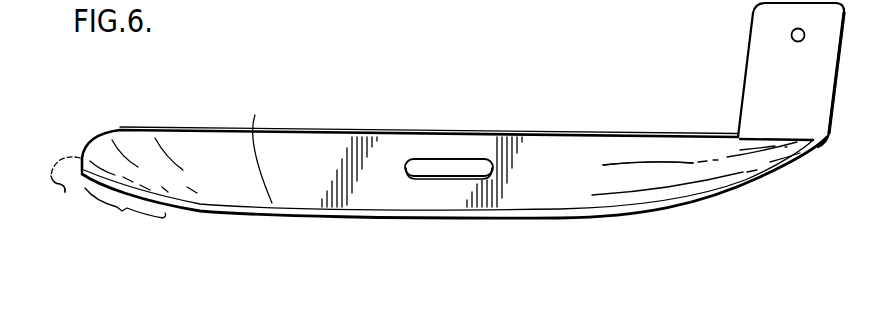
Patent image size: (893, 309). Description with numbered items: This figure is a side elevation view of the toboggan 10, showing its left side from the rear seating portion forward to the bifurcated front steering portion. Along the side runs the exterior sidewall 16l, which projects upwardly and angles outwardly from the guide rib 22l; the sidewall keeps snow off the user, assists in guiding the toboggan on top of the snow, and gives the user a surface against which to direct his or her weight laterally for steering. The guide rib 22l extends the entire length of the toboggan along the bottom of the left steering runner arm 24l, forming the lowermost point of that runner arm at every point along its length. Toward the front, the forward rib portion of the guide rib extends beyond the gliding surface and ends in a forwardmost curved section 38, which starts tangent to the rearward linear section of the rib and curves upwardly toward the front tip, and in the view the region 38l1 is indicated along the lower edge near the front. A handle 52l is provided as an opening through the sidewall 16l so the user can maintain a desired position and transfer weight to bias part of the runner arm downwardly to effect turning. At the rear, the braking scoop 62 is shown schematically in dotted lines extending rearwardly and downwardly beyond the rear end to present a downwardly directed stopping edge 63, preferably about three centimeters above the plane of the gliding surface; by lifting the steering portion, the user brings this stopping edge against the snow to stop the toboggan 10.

The toboggan 10 is at (216, 103).
The exterior sidewall 16l is at (329, 146).
The guide rib 22l is at (270, 145).
The steering runner arm 24l is at (724, 167).
The forwardmost curved section 38 is at (828, 151).
The front lower edge portion 38l1 is at (125, 219).
The handle 52l is at (457, 167).
The braking scoop 62 is at (68, 153).
The stopping edge 63 is at (64, 190).